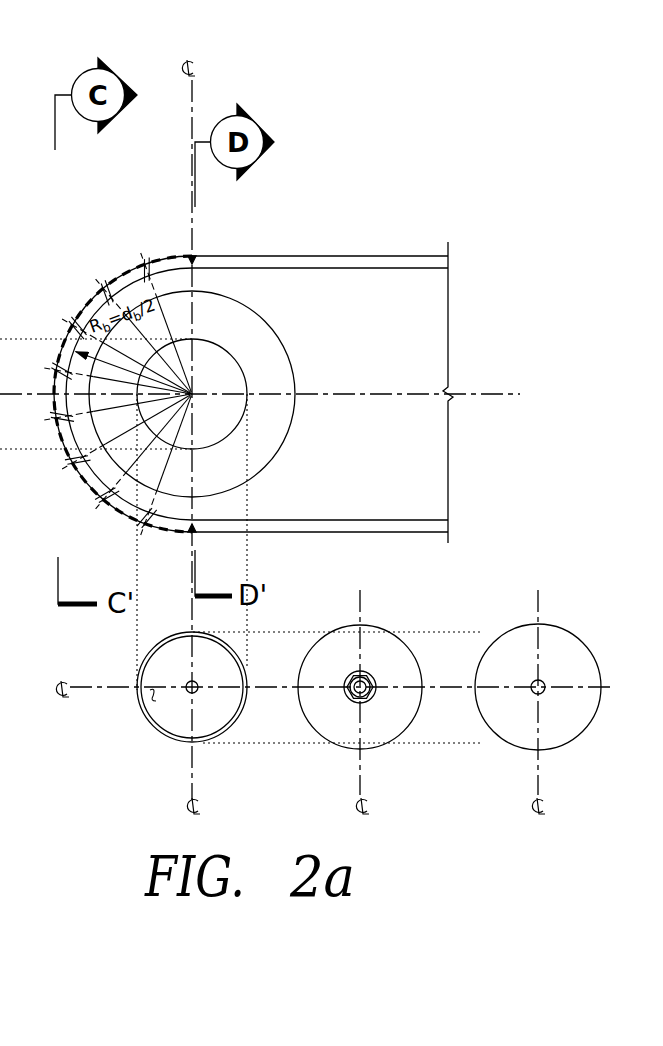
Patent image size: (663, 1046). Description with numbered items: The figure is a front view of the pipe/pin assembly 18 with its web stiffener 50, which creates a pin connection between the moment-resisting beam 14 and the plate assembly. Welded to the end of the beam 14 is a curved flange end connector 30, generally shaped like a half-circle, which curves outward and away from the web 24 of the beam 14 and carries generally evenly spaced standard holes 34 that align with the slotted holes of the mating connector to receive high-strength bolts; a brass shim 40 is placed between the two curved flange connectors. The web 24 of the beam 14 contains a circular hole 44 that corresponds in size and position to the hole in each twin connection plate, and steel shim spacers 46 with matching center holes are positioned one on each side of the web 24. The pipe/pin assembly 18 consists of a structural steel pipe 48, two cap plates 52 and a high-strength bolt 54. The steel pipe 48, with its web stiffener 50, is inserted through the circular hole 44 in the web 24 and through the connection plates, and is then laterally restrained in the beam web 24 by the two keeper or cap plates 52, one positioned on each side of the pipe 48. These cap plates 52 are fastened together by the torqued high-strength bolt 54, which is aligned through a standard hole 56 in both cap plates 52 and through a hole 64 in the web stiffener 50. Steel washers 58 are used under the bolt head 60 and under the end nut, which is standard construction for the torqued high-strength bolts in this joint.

The moment-resisting beam 14 is at (392, 532).
The pipe/pin assembly 18 is at (313, 735).
The web 24 is at (373, 308).
The curved flange end connector 30 is at (128, 280).
The standard holes 34 is at (90, 280).
The brass shim 40 is at (108, 512).
The circular hole 44 is at (216, 344).
The steel shim spacers 46 is at (219, 281).
The structural steel pipe 48 is at (140, 660).
The web stiffener 50 is at (147, 703).
The cap plates 52 is at (412, 725).
The high-strength bolt 54 is at (378, 672).
The standard hole 56 is at (532, 690).
The steel washers 58 is at (368, 672).
The bolt head 60 is at (352, 692).
The hole 64 is at (188, 698).